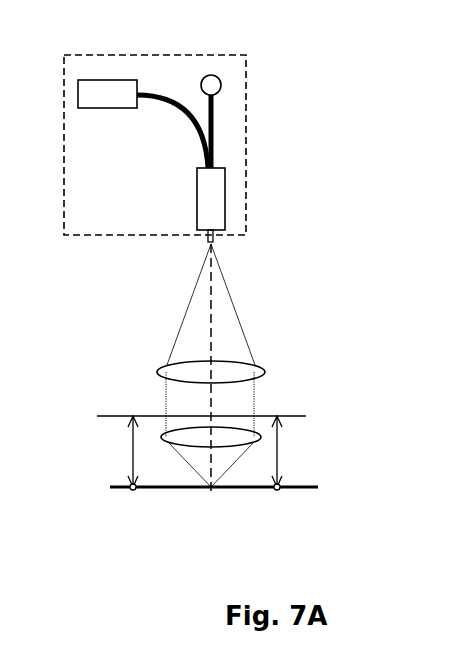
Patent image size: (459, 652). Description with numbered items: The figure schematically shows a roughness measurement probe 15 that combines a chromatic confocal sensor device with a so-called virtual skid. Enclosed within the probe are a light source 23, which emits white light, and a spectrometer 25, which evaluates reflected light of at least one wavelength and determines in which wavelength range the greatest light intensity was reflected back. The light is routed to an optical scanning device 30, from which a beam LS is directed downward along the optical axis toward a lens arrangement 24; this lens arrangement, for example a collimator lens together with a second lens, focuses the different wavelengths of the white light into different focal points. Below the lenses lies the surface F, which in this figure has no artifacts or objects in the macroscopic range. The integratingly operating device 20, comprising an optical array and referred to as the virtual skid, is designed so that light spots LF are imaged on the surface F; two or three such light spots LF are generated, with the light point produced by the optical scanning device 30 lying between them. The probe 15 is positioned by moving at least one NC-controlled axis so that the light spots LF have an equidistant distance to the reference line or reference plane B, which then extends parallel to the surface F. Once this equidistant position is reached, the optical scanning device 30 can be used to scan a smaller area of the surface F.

The roughness measurement probe 15 is at (342, 41).
The spectrometer 25 is at (93, 92).
The light source 23 is at (222, 85).
The optical scanning device 30 is at (271, 174).
The light beam LS is at (212, 287).
The lens arrangement 24 is at (294, 376).
The integratingly operating device 20 is at (322, 411).
The reference line or reference plane B is at (110, 415).
The light spots LF is at (135, 490).
The surface F is at (317, 489).